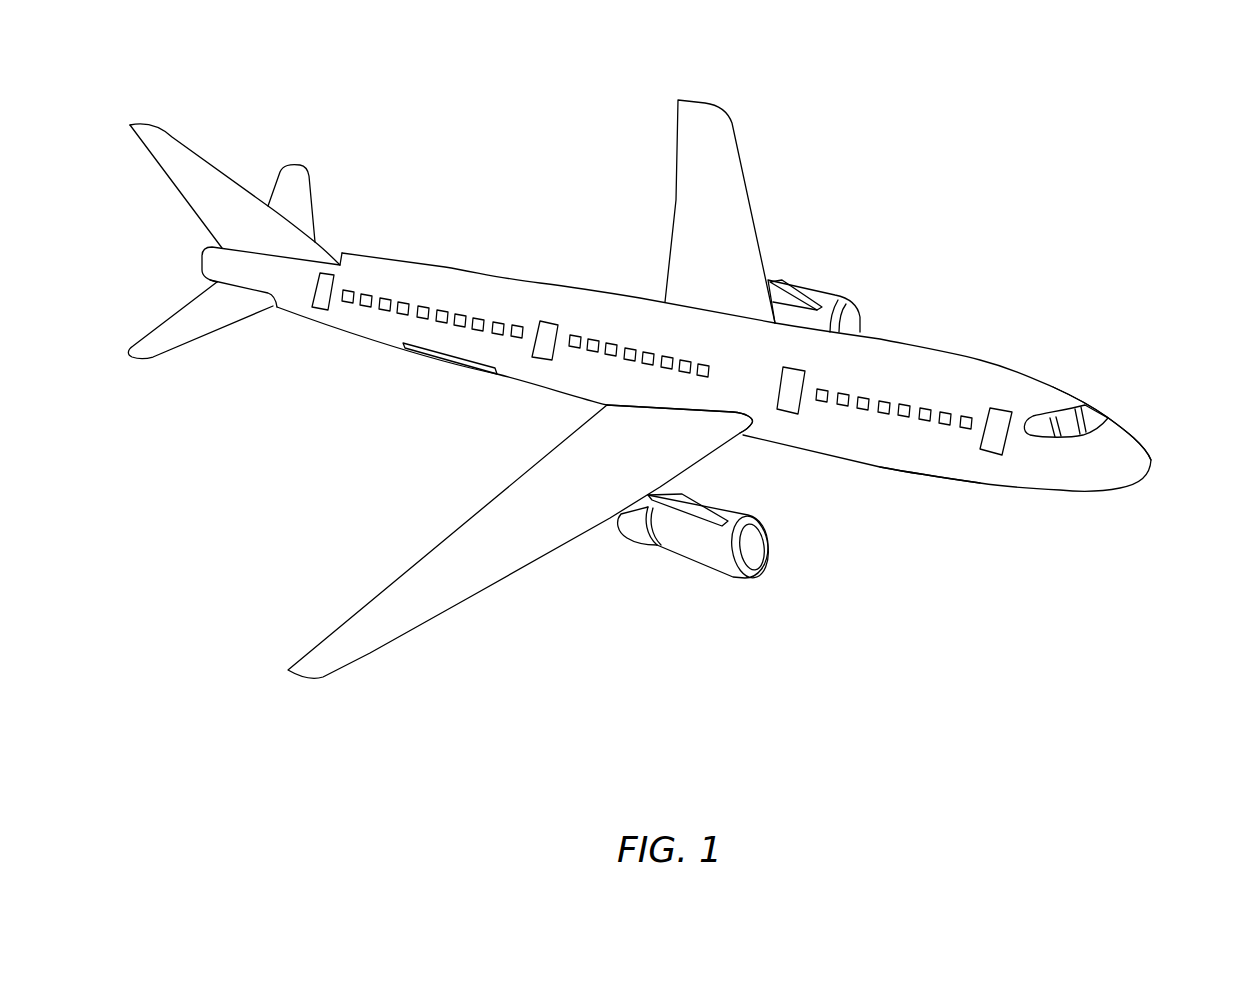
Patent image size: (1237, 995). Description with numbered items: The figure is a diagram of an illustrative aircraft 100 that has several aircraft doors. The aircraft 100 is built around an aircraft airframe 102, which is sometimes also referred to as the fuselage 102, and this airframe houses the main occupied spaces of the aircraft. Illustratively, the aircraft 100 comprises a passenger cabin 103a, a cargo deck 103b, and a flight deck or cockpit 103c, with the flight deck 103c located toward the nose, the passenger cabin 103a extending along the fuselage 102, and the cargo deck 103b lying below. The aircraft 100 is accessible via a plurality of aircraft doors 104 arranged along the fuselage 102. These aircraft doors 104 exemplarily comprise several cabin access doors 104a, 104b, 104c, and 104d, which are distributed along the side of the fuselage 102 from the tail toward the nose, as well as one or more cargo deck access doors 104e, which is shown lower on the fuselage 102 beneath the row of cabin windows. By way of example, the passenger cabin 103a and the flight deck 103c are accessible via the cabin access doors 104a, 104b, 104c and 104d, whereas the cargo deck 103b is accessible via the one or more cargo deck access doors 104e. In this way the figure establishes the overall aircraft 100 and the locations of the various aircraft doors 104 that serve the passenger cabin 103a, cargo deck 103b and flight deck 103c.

The aircraft 100 is at (950, 92).
The aircraft airframe 102 is at (463, 280).
The passenger cabin 103a is at (898, 423).
The cargo deck 103b is at (762, 427).
The flight deck 103c is at (1107, 408).
The aircraft doors 104 is at (1020, 450).
The cabin access door 104a is at (332, 283).
The cabin access door 104b is at (548, 327).
The cabin access door 104c is at (797, 382).
The cabin access door 104d is at (1003, 417).
The cargo deck access door 104e is at (437, 362).